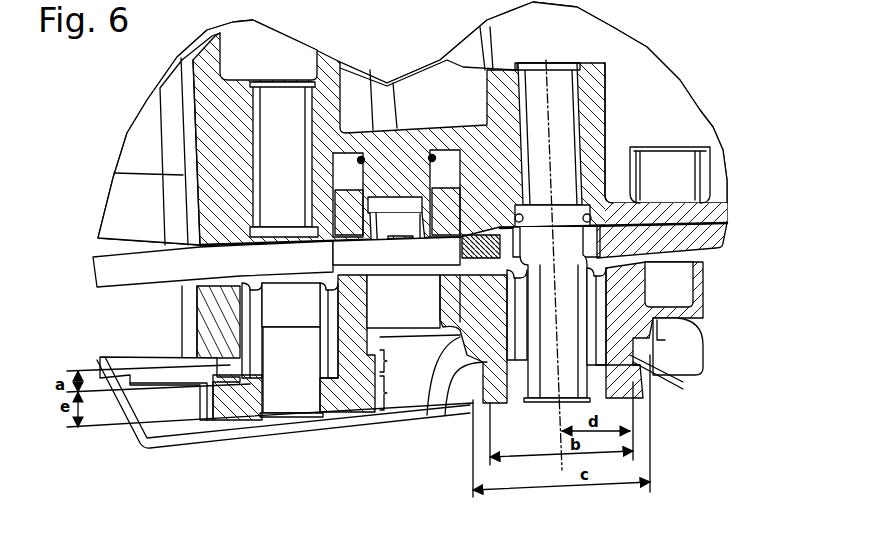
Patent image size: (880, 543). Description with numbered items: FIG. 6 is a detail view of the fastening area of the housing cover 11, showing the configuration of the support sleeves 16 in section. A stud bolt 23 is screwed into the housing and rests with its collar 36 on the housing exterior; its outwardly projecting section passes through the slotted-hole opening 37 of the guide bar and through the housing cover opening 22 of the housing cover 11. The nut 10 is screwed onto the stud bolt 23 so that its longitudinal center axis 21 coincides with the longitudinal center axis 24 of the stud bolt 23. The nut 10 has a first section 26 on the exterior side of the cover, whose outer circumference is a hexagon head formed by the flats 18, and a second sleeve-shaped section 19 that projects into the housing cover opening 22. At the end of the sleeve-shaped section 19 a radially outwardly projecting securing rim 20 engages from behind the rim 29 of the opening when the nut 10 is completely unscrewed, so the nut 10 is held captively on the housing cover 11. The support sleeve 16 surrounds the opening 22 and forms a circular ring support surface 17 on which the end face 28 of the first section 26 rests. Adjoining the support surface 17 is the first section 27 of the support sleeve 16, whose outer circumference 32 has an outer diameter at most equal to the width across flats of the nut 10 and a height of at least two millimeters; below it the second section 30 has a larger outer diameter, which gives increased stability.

The nut 10 is at (240, 410).
The housing cover 11 is at (153, 448).
The support sleeve 16 is at (235, 361).
The support surface 17 is at (350, 407).
The flats 18 is at (213, 407).
The second sleeve-shaped section 19 is at (607, 302).
The securing rim 20 is at (722, 243).
The longitudinal center axis 21 is at (561, 411).
The housing cover opening 22 is at (176, 287).
The stud bolt 23 is at (565, 185).
The longitudinal center axis 24 is at (547, 103).
The first section 26 is at (397, 393).
The first section 27 is at (397, 361).
The end face 28 is at (467, 362).
The rim 29 is at (247, 352).
The second section 30 is at (667, 331).
The outer circumference 32 is at (655, 365).
The collar 36 is at (187, 163).
The opening 37 is at (177, 263).